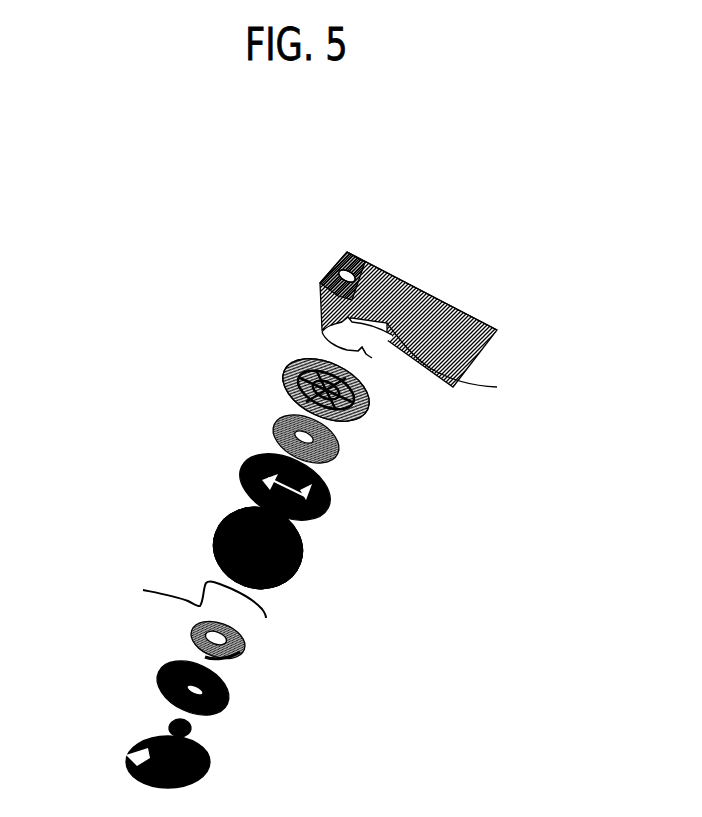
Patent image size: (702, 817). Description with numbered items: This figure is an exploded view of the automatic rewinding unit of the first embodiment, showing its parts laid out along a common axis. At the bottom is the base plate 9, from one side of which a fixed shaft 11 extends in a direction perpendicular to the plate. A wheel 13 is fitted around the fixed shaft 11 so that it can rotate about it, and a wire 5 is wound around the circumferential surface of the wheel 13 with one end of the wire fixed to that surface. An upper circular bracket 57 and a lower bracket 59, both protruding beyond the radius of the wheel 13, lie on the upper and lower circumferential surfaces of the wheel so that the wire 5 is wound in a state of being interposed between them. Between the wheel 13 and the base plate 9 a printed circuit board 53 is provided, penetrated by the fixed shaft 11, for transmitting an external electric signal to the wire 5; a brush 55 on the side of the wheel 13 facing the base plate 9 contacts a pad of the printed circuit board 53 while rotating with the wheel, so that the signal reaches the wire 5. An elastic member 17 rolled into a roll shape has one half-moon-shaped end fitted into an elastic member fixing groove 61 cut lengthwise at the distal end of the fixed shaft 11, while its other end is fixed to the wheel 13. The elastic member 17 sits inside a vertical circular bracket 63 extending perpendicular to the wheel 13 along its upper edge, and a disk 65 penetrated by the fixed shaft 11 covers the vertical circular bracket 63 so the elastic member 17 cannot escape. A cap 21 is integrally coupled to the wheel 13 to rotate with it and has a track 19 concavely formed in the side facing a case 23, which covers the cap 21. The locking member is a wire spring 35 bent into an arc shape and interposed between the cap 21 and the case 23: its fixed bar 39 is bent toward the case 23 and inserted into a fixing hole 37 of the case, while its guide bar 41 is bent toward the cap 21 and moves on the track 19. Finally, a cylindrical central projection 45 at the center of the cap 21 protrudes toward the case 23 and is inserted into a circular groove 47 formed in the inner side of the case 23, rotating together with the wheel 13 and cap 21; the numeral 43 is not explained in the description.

The wire 5 is at (262, 615).
The base plate 9 is at (210, 767).
The fixed shaft 11 is at (190, 737).
The wheel 13 is at (307, 550).
The elastic member 17 is at (247, 467).
The track 19 is at (370, 400).
The cap 21 is at (287, 376).
The case 23 is at (445, 312).
The wire spring 35 is at (323, 337).
The fixing hole 37 is at (387, 270).
The fixed bar 39 is at (456, 366).
The guide bar 41 is at (366, 354).
The hole 43 is at (337, 281).
The central projection 45 is at (355, 420).
The circular groove 47 is at (363, 280).
The printed circuit board 53 is at (160, 676).
The brush 55 is at (245, 645).
The upper circular bracket 57 is at (213, 527).
The lower bracket 59 is at (213, 543).
The elastic member fixing groove 61 is at (193, 727).
The vertical circular bracket 63 is at (300, 560).
The disk 65 is at (272, 427).